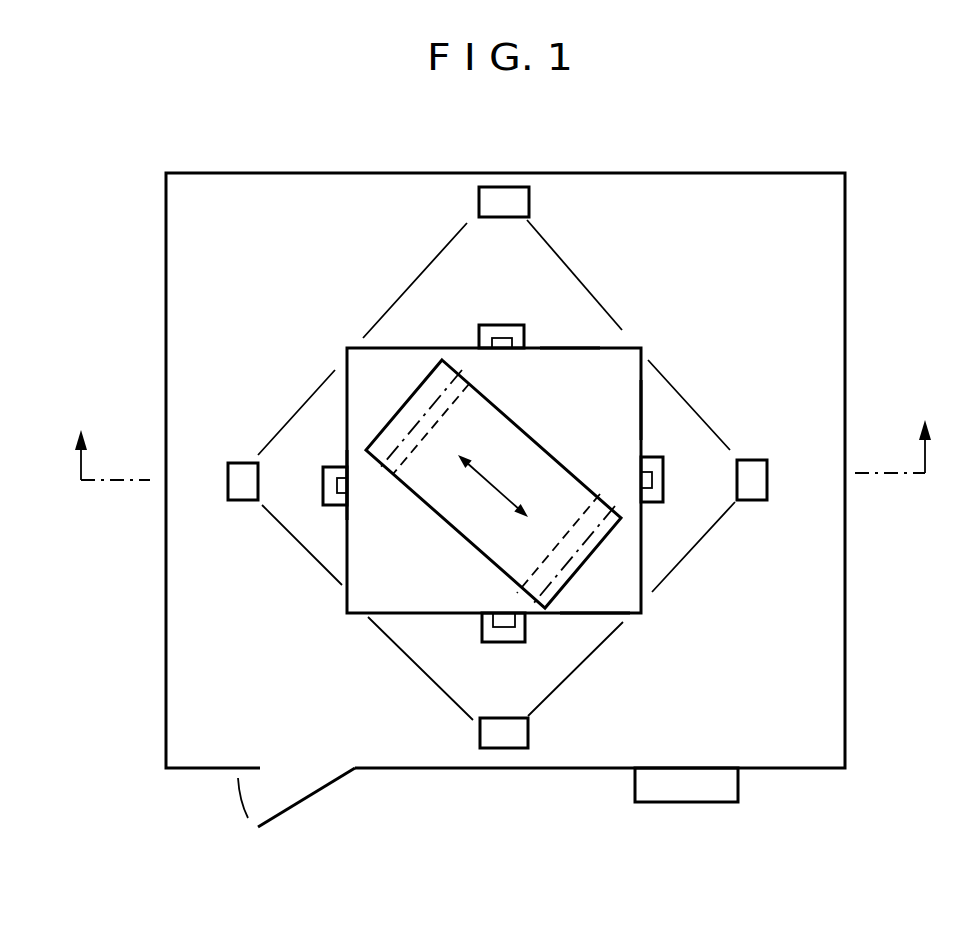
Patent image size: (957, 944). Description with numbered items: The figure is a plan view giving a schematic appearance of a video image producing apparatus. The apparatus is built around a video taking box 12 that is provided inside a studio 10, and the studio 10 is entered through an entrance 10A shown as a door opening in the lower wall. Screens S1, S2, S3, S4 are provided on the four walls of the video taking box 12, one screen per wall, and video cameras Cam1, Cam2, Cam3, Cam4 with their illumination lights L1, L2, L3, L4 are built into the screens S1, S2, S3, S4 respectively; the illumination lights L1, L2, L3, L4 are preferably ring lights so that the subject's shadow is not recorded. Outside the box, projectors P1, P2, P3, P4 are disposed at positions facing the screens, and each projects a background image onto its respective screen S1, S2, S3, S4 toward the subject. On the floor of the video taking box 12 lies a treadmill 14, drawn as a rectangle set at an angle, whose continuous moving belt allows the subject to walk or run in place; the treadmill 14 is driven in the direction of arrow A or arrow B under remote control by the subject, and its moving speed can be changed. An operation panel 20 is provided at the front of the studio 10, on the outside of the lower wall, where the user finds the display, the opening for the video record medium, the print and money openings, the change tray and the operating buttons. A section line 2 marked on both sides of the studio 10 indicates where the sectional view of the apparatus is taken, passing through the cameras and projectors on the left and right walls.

The studio 10 is at (845, 323).
The entrance 10A is at (345, 778).
The video taking box 12 is at (628, 345).
The treadmill 14 is at (490, 543).
The operation panel 20 is at (738, 780).
The line 2— 2 is at (500, 431).
The arrow A is at (510, 495).
The arrow B is at (449, 461).
The video camera Cam1 is at (337, 466).
The video camera Cam2 is at (508, 342).
The video camera Cam3 is at (661, 457).
The video camera Cam4 is at (527, 619).
The projector P1 is at (240, 462).
The projector P2 is at (529, 202).
The projector P3 is at (767, 483).
The projector P4 is at (528, 733).
The illumination light L1 is at (333, 506).
The illumination light L2 is at (493, 324).
The illumination light L3 is at (663, 491).
The illumination light L4 is at (483, 631).
The screen S1 is at (347, 577).
The screen S2 is at (563, 349).
The screen S3 is at (641, 413).
The screen S4 is at (603, 613).